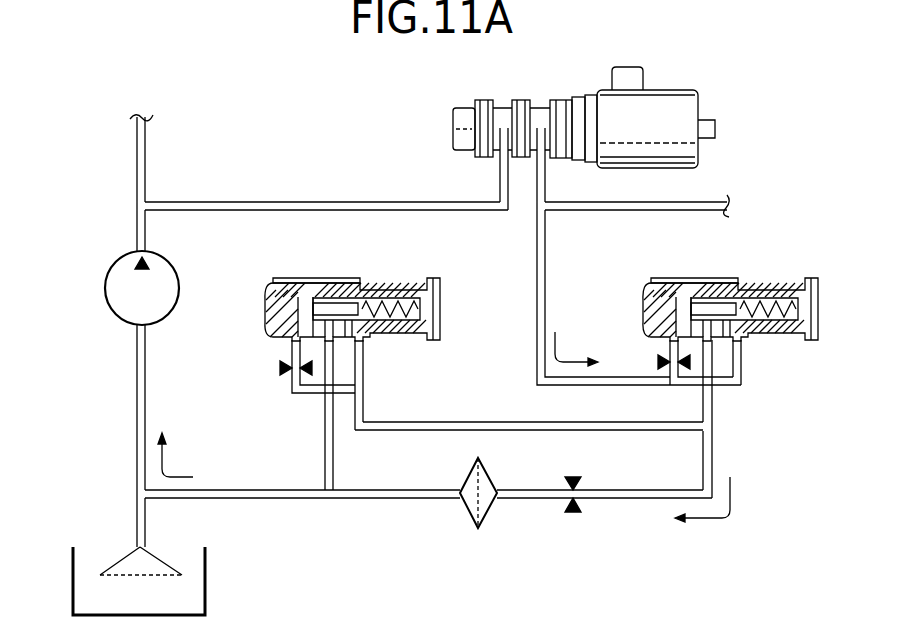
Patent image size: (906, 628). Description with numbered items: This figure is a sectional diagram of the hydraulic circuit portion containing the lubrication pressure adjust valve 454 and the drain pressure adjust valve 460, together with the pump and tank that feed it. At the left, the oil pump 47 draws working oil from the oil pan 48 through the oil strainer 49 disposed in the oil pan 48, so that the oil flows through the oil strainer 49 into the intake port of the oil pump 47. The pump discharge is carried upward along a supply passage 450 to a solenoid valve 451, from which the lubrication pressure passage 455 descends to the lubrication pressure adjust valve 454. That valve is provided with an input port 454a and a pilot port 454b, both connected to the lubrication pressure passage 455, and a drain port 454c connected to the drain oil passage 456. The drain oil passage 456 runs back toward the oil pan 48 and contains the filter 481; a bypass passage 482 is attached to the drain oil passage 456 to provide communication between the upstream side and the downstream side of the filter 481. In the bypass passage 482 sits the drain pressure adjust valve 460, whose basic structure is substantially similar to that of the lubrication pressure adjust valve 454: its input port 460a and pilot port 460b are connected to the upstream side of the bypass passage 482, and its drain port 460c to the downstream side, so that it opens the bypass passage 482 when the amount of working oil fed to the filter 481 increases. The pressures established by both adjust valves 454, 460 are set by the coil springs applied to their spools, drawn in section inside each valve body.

The oil pump 47 is at (106, 277).
The oil pan 48 is at (206, 576).
The oil strainer 49 is at (122, 560).
The oil supply passage 450 is at (223, 202).
The solenoid switching valve 451 is at (670, 100).
The lubrication pressure adjust valve 454 is at (727, 283).
The input port 454a is at (742, 334).
The pilot port 454b is at (656, 349).
The drain port 454c is at (708, 340).
The lubrication pressure passage 455 is at (545, 253).
The drain oil passage 456 is at (633, 499).
The drain pressure adjust valve 460 is at (347, 280).
The input port 460a is at (365, 334).
The pilot port 460b is at (293, 341).
The drain port 460c is at (330, 340).
The filter 481 is at (490, 513).
The bypass passage 482 is at (613, 431).